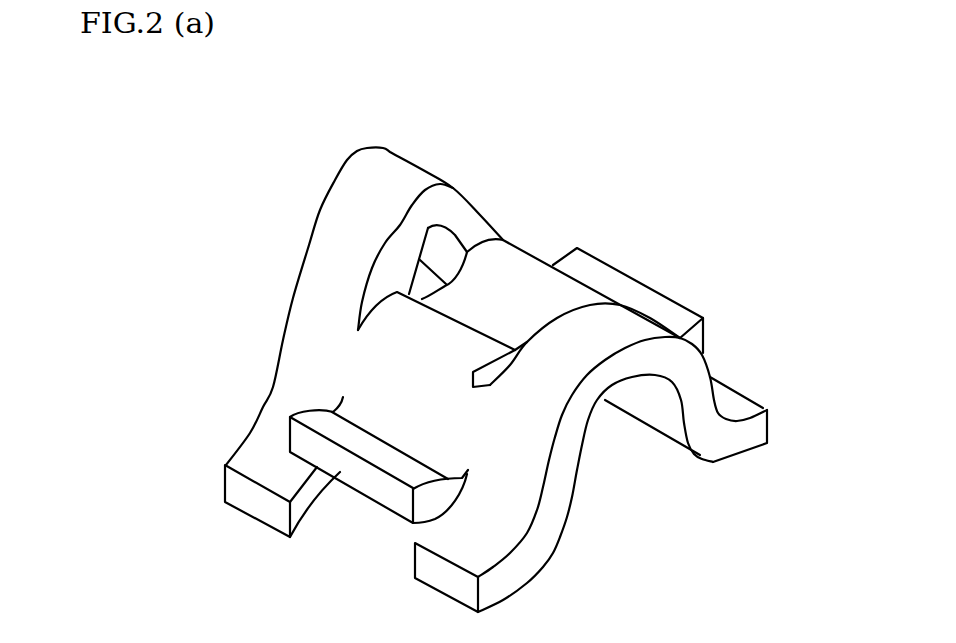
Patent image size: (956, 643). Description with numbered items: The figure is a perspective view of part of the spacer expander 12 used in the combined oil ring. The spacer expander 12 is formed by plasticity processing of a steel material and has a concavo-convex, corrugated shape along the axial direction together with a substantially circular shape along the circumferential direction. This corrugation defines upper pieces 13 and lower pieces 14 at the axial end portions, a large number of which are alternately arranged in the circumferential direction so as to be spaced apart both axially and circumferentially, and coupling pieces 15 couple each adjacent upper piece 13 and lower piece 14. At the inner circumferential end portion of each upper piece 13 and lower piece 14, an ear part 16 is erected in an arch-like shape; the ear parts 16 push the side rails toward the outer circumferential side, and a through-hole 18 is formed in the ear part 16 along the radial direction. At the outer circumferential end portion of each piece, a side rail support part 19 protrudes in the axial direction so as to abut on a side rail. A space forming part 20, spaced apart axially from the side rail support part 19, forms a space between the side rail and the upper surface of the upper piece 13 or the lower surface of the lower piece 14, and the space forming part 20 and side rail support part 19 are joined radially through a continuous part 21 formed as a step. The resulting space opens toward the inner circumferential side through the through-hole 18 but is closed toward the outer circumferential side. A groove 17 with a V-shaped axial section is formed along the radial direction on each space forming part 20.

The spacer expander 12 is at (700, 110).
The upper piece 13 is at (618, 370).
The lower piece 14 is at (502, 577).
The coupling piece 15 is at (548, 492).
The ear part 16 is at (397, 165).
The groove 17 is at (483, 300).
The through-hole 18 is at (438, 253).
The side rail support part 19 is at (612, 320).
The space forming part 20 is at (537, 273).
The continuous part 21 is at (473, 387).